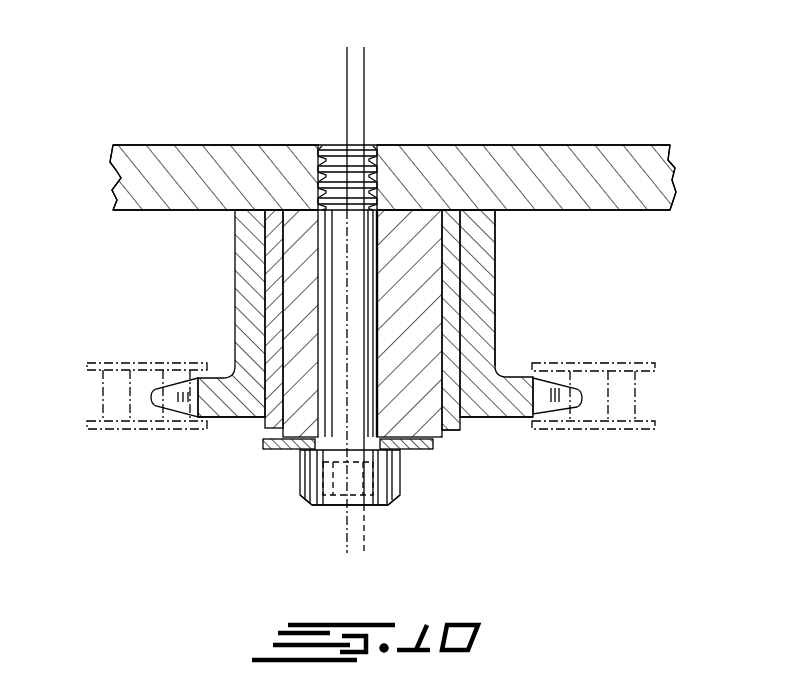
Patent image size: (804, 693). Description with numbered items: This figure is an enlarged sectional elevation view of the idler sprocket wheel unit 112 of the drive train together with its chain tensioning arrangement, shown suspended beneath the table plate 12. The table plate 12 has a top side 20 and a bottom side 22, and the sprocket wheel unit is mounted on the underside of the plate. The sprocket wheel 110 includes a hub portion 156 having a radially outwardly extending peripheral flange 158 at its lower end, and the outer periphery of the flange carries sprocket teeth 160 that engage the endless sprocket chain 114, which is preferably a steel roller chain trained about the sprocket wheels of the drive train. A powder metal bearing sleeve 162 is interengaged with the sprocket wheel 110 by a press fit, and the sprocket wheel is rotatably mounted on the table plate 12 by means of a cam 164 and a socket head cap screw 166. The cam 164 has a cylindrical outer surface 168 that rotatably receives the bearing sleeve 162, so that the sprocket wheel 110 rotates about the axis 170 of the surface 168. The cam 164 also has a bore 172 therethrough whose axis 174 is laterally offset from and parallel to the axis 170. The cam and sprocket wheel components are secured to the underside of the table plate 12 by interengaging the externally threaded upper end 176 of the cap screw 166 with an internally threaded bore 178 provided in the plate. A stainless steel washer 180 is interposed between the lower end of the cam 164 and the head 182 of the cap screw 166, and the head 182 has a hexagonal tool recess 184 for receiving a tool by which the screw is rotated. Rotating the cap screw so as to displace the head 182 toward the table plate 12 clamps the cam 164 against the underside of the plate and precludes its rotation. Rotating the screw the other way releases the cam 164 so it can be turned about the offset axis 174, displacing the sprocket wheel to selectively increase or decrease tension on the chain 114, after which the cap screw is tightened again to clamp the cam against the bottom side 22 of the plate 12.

The table plate 12 is at (230, 140).
The top side 20 is at (147, 145).
The bottom side 22 is at (155, 212).
The sprocket wheel 110 is at (580, 311).
The idler sprocket wheel unit 112 is at (472, 470).
The sprocket chain 114 is at (156, 356).
The hub portion 156 is at (485, 278).
The peripheral flange 158 is at (515, 383).
The sprocket teeth 160 is at (562, 402).
The bearing sleeve 162 is at (450, 428).
The cam 164 is at (421, 205).
The socket head cap screw 166 is at (382, 515).
The cylindrical outer surface 168 is at (445, 258).
The axis 170 is at (365, 68).
The bore 172 is at (330, 397).
The axis 174 is at (347, 70).
The externally threaded upper end 176 is at (360, 146).
The internally threaded bore 178 is at (332, 160).
The washer 180 is at (263, 447).
The head 182 is at (400, 488).
The hexagonal tool recess 184 is at (330, 512).